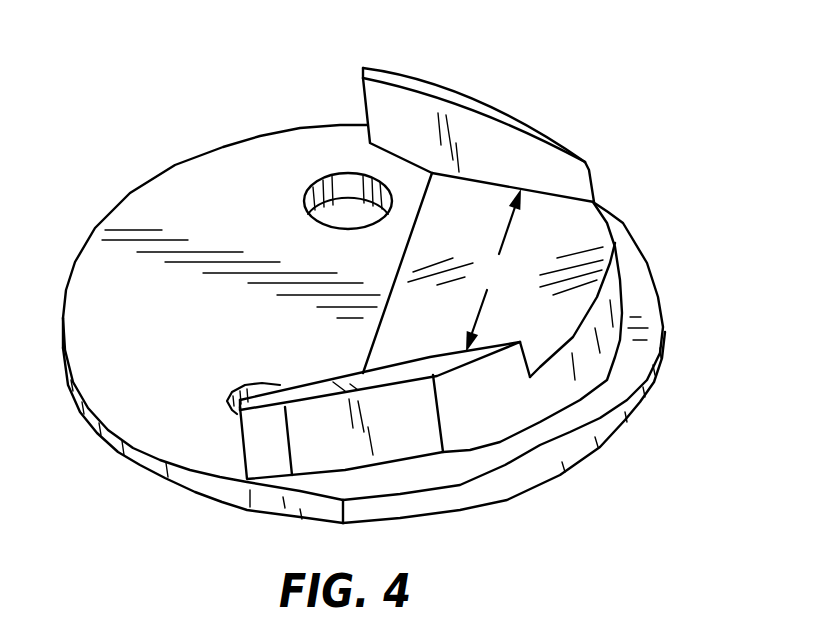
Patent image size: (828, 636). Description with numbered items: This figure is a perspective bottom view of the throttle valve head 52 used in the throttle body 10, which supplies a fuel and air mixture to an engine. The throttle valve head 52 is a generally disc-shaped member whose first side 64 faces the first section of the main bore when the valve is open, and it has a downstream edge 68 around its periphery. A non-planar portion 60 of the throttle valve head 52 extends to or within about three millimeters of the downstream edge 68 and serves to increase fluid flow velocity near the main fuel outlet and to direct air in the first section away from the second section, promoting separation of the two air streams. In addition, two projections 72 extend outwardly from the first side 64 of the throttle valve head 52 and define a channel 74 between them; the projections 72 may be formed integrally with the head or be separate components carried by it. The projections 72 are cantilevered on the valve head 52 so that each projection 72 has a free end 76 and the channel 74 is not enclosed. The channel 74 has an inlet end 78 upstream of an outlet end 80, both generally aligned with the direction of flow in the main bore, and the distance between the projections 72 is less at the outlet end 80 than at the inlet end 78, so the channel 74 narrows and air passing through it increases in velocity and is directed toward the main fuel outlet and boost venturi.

The throttle body 10 is at (571, 103).
The throttle valve head 52 is at (622, 168).
The non-planar portion 60 is at (577, 237).
The first side 64 is at (226, 161).
The downstream edge 68 is at (663, 342).
The projections 72 is at (502, 111).
The channel 74 is at (493, 270).
The free end 76 is at (427, 90).
The inlet end 78 is at (318, 150).
The outlet end 80 is at (596, 201).